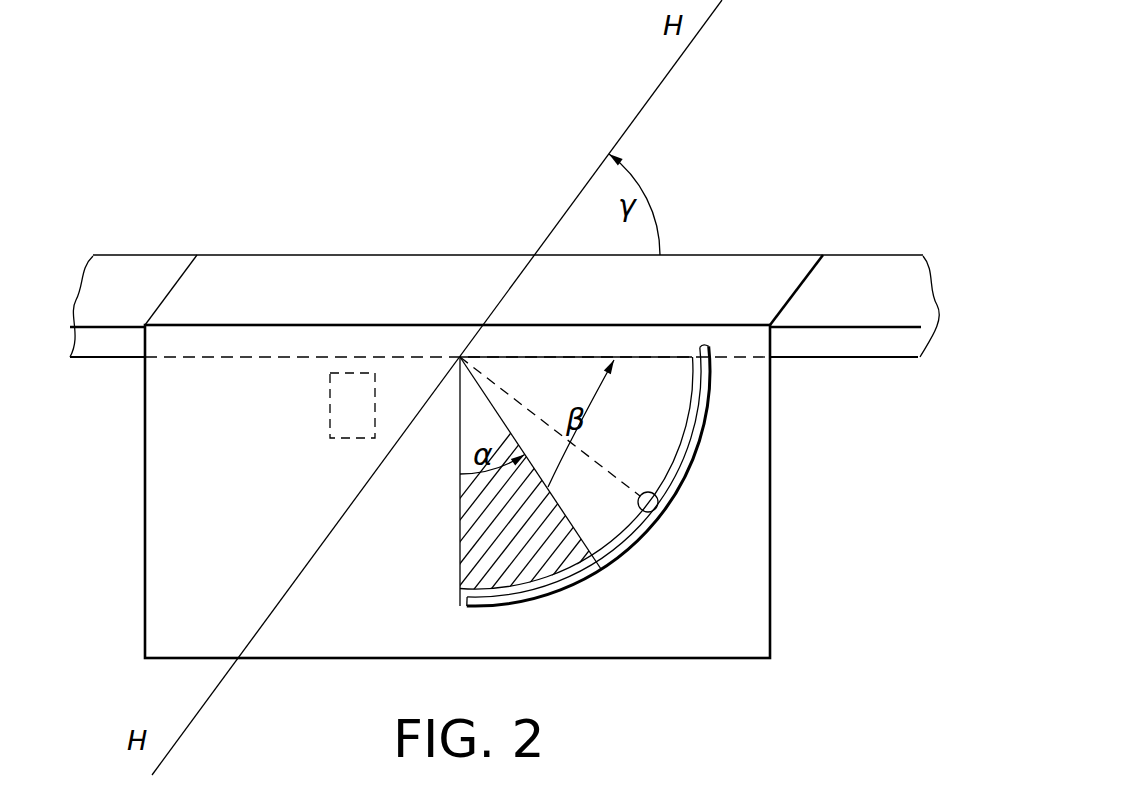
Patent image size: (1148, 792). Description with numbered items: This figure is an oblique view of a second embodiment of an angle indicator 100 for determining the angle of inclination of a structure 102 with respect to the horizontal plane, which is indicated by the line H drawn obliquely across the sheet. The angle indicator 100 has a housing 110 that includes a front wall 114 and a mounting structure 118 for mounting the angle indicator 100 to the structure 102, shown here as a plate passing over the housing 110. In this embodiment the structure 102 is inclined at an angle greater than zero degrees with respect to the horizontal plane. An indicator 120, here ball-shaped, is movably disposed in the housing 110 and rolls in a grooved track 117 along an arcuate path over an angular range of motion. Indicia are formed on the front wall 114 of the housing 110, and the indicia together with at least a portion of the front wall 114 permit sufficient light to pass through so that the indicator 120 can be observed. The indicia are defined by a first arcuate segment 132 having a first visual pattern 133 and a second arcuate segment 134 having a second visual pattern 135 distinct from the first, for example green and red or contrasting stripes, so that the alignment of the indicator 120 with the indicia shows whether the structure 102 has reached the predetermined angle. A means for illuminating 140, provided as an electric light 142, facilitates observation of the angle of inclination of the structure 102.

The angle indicator 100 is at (718, 188).
The structure 102 is at (817, 337).
The housing 110 is at (163, 448).
The front wall 114 is at (275, 421).
The grooved track 117 is at (608, 527).
The mounting structure 118 is at (227, 280).
The indicator 120 is at (660, 496).
The first arcuate segment 132 is at (567, 382).
The first visual pattern 133 is at (657, 438).
The second arcuate segment 134 is at (467, 510).
The second visual pattern 135 is at (539, 542).
The means for illuminating 140 is at (325, 355).
The electric light 142 is at (360, 388).